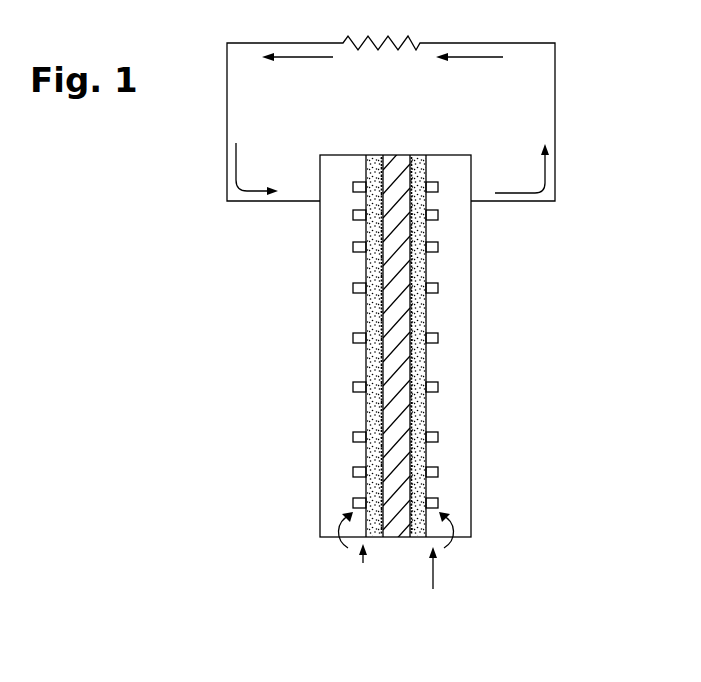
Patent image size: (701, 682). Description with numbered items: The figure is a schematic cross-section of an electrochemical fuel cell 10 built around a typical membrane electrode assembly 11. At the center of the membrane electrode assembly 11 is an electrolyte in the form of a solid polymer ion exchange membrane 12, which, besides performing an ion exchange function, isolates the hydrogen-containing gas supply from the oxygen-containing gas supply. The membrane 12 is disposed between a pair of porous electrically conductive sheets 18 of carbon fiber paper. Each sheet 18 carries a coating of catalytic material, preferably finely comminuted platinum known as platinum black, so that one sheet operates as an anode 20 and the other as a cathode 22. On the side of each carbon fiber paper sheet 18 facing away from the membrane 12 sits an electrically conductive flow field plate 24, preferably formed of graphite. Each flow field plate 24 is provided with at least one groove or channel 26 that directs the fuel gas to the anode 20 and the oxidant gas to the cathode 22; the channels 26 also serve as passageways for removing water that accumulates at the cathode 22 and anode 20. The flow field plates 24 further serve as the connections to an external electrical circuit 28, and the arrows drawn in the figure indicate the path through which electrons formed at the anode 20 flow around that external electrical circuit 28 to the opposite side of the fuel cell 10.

The electrochemical fuel cell 10 is at (228, 286).
The membrane electrode assembly 11 is at (352, 132).
The solid polymer ion exchange membrane 12 is at (392, 160).
The porous electrically conductive sheet 18 is at (370, 410).
The anode 20 is at (415, 402).
The cathode 22 is at (383, 358).
The flow field plate 24 is at (330, 458).
The channel 26 is at (346, 284).
The external electrical circuit 28 is at (252, 43).